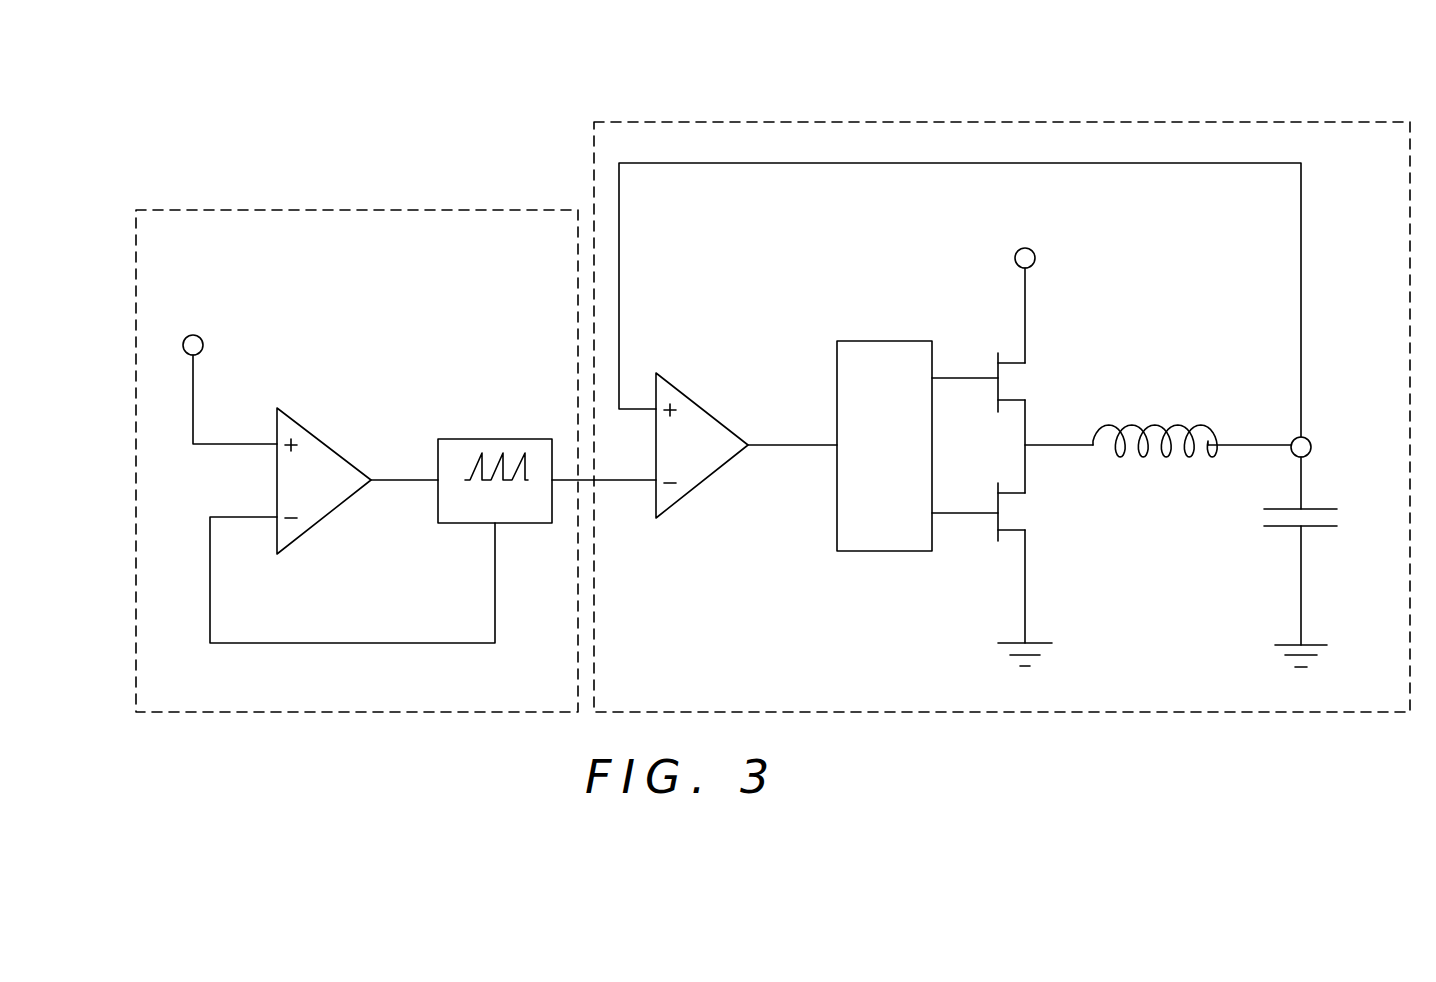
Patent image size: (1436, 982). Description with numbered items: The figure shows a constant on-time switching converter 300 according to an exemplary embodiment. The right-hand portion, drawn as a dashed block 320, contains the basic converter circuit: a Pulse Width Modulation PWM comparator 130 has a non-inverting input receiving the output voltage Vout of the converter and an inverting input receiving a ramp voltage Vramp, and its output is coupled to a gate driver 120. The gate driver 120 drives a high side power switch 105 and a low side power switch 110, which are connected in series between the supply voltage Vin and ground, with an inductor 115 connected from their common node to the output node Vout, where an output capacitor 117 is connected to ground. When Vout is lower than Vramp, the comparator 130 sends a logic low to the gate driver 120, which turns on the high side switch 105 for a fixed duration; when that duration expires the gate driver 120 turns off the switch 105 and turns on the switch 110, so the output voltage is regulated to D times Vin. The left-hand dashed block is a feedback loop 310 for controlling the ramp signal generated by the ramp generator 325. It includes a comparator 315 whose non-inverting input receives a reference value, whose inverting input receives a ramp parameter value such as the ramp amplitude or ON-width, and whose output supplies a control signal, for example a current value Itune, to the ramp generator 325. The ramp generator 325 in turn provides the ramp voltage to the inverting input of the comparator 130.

The constant on-time switching converter 300 is at (717, 42).
The feedback loop 310 is at (307, 203).
The comparator 315 is at (323, 437).
The ramp generator 325 is at (458, 428).
The power stage block 320 is at (1201, 110).
The Pulse Width Modulation PWM comparator 130 is at (713, 412).
The gate driver 120 is at (902, 462).
The high side power switch 105 is at (1025, 383).
The low side power switch 110 is at (1025, 513).
The inductor 115 is at (1123, 423).
The output capacitor 117 is at (1310, 530).